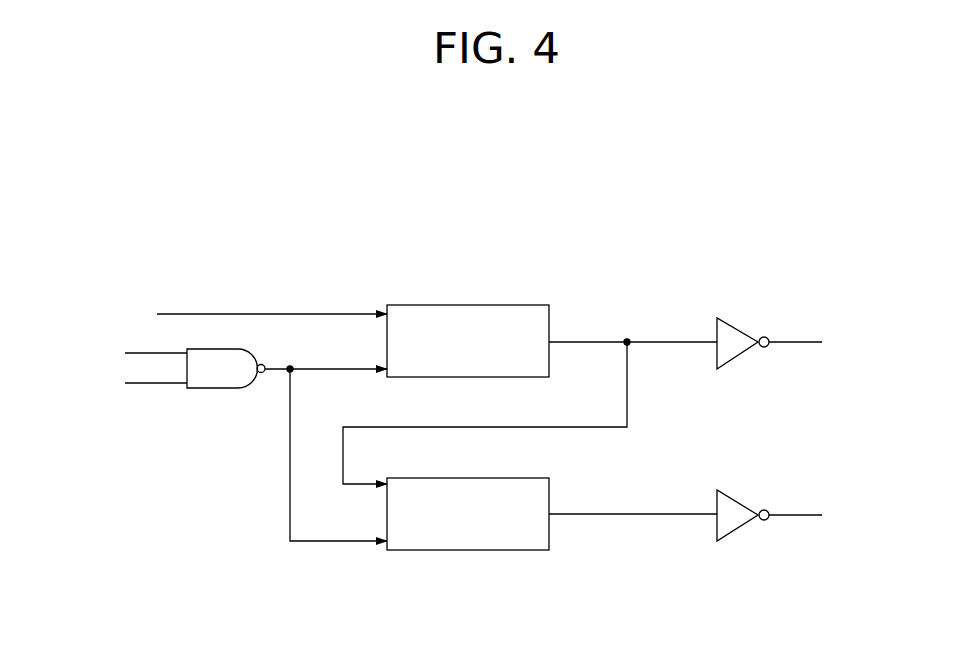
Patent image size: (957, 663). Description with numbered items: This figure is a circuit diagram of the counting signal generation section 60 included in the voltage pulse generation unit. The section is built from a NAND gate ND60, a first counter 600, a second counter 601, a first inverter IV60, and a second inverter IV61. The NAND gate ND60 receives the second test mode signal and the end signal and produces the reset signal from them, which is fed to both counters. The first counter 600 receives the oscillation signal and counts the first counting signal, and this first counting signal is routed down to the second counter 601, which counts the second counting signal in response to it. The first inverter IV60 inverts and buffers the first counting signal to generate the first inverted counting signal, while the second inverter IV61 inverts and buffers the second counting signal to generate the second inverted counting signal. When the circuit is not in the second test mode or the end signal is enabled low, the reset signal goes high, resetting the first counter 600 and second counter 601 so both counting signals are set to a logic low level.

The counting signal generation section 60 is at (662, 182).
The first counter 600 is at (467, 305).
The second counter 601 is at (466, 552).
The NAND gate ND60 is at (226, 357).
The first inverter IV60 is at (741, 329).
The second inverter IV61 is at (741, 501).